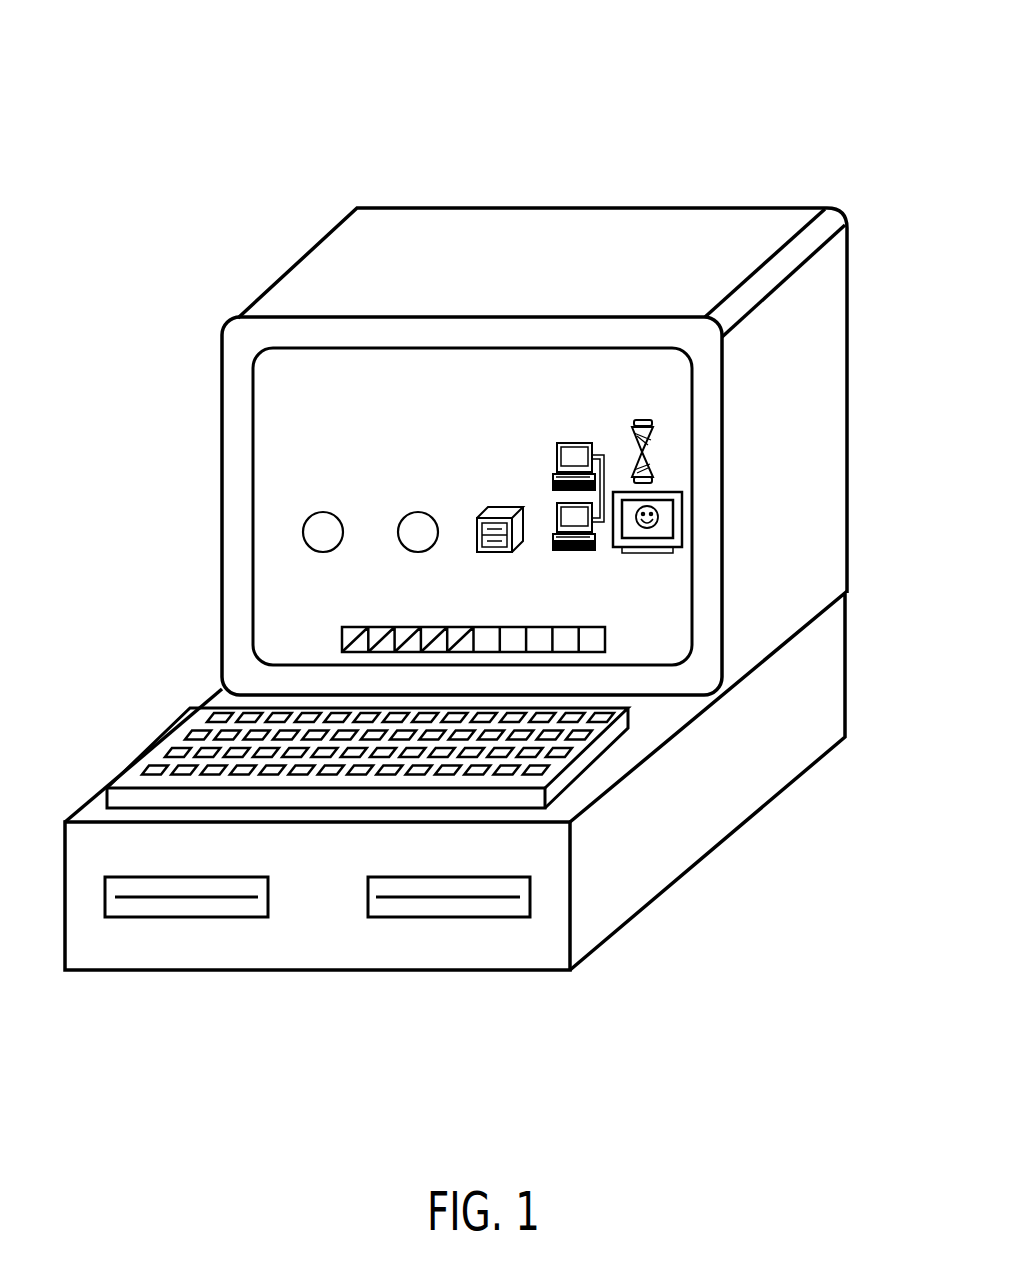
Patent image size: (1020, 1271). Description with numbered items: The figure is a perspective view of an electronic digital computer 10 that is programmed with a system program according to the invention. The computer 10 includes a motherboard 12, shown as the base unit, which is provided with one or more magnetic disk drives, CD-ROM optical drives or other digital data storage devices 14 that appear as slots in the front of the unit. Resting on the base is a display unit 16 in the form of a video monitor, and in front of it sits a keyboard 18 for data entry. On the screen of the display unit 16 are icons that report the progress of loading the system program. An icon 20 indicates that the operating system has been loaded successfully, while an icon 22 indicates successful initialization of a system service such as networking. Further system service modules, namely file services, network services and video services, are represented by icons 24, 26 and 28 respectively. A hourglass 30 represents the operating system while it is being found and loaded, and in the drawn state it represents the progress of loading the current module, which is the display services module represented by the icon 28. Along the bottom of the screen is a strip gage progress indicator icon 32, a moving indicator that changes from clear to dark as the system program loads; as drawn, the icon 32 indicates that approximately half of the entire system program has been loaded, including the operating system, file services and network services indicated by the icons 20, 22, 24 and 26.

The electronic digital computer 10 is at (377, 130).
The motherboard 12 is at (822, 714).
The digital data storage devices 14 is at (230, 897).
The display unit 16 is at (750, 218).
The keyboard 18 is at (524, 798).
The operating system loaded icon 20 is at (323, 512).
The networking system service icon 22 is at (418, 512).
The file services icon 24 is at (503, 512).
The network services icon 26 is at (573, 443).
The video services icon 28 is at (637, 553).
The hourglass icon 30 is at (641, 420).
The strip gage progress indicator icon 32 is at (340, 640).